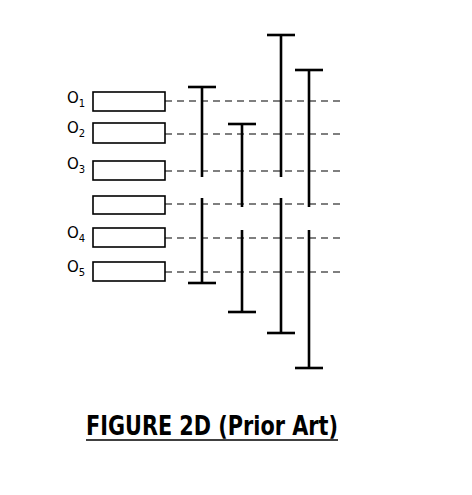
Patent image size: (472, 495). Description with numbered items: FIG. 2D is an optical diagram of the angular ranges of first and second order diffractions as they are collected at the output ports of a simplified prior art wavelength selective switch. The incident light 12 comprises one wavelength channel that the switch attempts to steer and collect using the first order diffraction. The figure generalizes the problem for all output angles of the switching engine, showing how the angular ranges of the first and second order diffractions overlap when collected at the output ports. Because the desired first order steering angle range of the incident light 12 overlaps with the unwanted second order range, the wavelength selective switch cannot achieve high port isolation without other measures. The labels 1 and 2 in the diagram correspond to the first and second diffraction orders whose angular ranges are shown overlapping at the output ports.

The incident light 12 is at (162, 206).
The first stage coupling bars (+1/-1) 1 is at (222, 199).
The second stage coupling bars (+2/-2) 2 is at (295, 201).